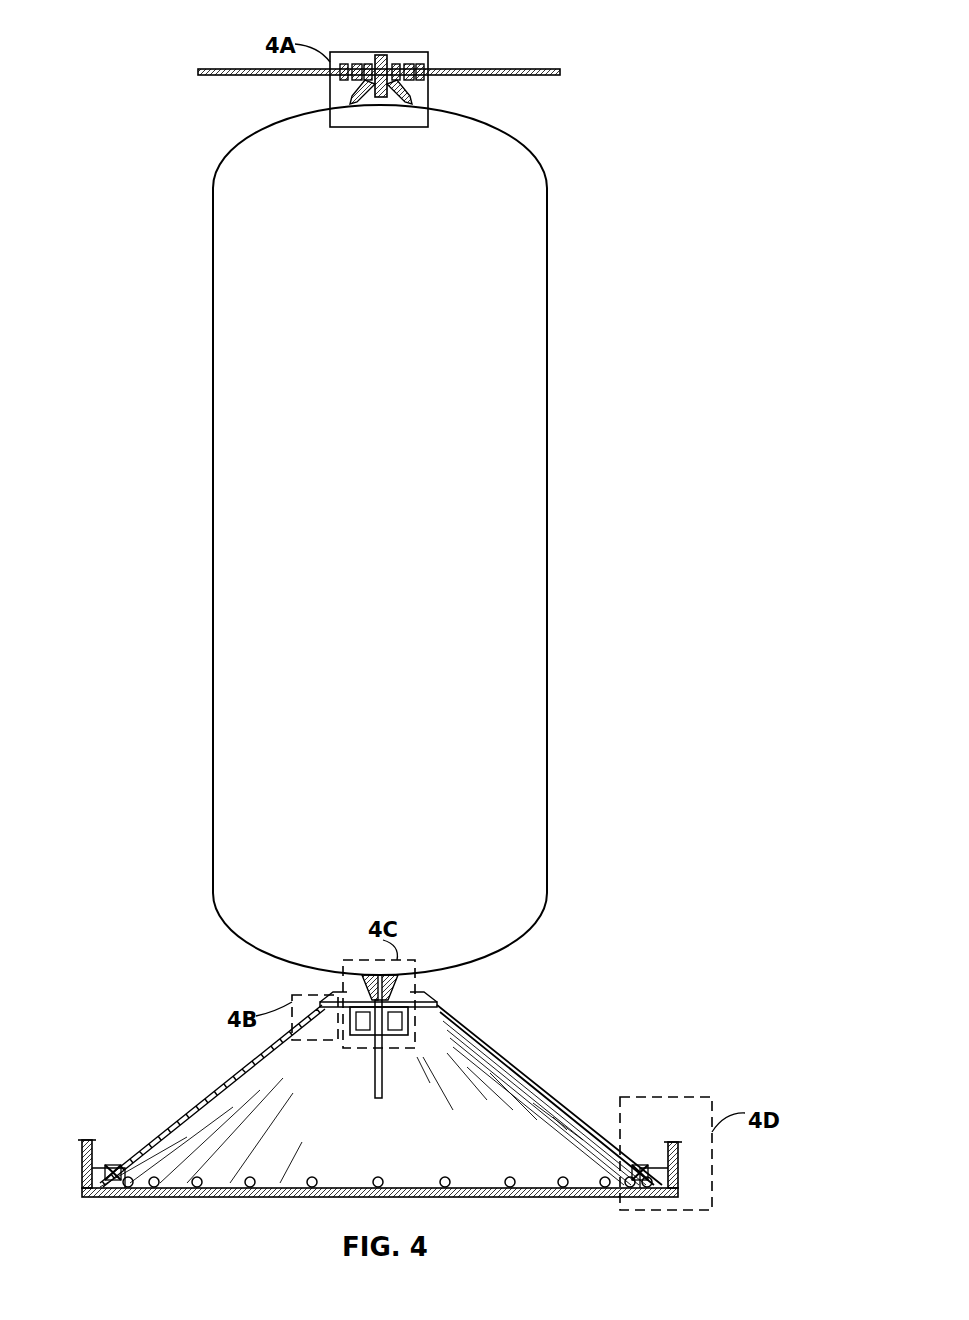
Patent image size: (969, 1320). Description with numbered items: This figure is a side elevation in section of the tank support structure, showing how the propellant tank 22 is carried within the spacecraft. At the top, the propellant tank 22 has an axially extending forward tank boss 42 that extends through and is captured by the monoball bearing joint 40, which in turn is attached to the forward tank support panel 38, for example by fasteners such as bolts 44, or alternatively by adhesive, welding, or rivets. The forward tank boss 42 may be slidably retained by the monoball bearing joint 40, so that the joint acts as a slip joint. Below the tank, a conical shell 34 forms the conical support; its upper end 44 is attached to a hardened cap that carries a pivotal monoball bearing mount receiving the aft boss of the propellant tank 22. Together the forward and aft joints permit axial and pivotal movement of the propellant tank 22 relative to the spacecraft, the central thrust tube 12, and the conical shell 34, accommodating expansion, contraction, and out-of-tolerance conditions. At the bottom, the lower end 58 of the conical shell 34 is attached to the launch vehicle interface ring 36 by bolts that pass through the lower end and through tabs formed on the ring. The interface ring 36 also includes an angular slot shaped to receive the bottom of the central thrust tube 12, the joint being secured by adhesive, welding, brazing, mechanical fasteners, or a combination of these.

The central thrust tube 12 is at (82, 1152).
The propellant tank 22 is at (548, 252).
The conical shell 34 is at (503, 1083).
The launch vehicle interface ring 36 is at (82, 1192).
The forward tank support panel 38 is at (482, 69).
The monoball bearing joint 40 is at (392, 66).
The forward tank boss 42 is at (377, 52).
The upper end of the conical shell 44 is at (437, 1004).
The lower end of the conical shell 58 is at (640, 1166).